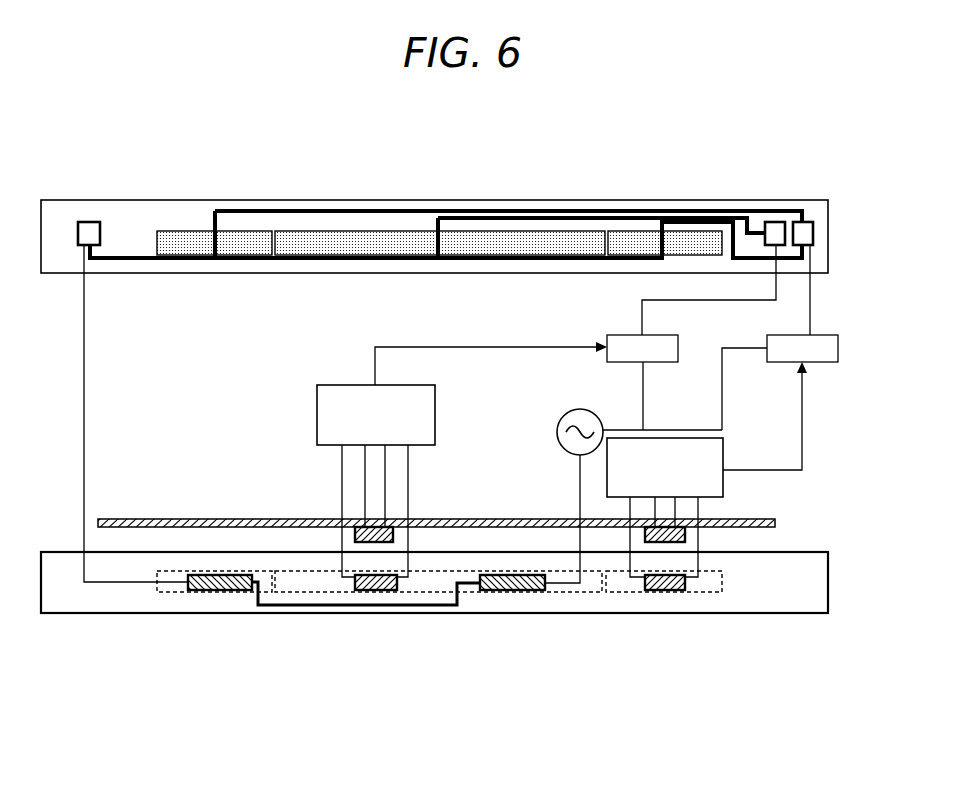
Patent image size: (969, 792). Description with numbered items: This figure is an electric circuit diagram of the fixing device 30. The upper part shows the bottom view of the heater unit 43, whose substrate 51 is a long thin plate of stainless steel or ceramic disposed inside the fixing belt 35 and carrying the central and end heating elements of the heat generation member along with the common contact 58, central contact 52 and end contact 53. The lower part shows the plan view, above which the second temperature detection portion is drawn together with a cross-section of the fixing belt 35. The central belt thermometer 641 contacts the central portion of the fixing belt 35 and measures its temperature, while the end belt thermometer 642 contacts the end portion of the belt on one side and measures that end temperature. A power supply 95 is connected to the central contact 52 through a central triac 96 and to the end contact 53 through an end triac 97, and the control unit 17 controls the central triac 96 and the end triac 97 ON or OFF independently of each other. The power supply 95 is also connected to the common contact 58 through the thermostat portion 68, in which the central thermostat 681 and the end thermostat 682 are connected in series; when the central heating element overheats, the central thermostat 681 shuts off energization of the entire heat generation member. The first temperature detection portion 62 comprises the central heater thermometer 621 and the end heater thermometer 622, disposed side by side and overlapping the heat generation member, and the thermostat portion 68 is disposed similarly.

The fixing device 30 is at (850, 183).
The heater unit 43 is at (63, 190).
The substrate 51 is at (138, 224).
The common contact 58 is at (89, 221).
The central contact 52 is at (774, 221).
The end contact 53 is at (808, 221).
The central triac 96 is at (661, 335).
The end triac 97 is at (824, 335).
The power supply 95 is at (573, 410).
The control unit 17 is at (389, 385).
The fixing belt 35 is at (243, 518).
The central belt thermometer 641 is at (387, 527).
The end belt thermometer 642 is at (688, 525).
The end thermostat 682 is at (210, 591).
The central thermostat 681 is at (521, 591).
The thermostat portion 68 is at (372, 641).
The central heater thermometer 621 is at (371, 591).
The end heater thermometer 622 is at (675, 591).
The first temperature detection portion 62 is at (521, 641).